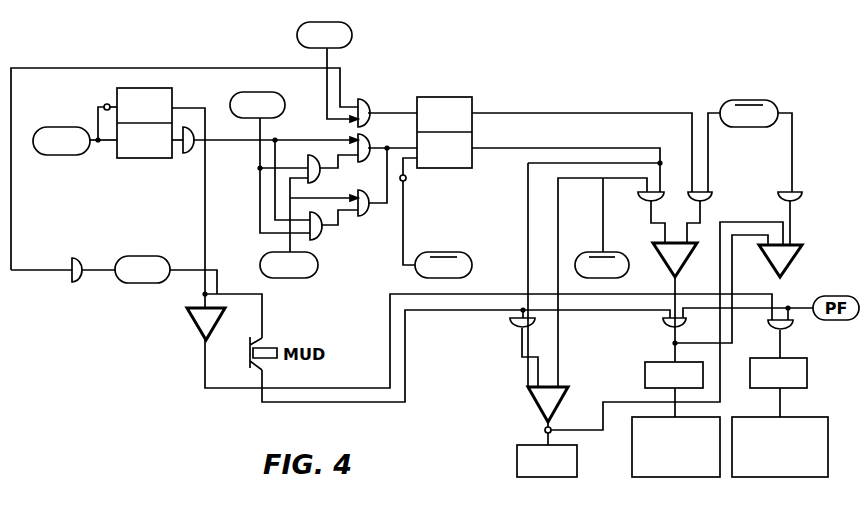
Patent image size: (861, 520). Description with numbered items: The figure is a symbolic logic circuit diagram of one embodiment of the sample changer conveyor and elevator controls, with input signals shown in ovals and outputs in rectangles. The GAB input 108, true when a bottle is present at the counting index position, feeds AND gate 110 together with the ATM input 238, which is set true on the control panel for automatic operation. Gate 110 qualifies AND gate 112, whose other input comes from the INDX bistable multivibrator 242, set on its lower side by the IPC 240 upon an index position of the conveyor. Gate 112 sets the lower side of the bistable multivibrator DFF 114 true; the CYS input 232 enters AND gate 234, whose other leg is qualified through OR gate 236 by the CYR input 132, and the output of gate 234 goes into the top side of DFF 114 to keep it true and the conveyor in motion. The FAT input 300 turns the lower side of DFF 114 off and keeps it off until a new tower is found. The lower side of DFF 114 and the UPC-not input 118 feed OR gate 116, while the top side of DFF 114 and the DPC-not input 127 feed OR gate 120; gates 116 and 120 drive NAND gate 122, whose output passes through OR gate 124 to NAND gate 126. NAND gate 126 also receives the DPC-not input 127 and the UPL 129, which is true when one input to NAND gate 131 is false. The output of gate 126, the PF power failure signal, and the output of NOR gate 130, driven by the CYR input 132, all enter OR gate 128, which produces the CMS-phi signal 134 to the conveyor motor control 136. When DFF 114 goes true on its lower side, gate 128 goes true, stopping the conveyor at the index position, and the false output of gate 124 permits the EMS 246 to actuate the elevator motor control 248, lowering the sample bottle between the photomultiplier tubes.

The GAB input 108 is at (281, 117).
The AND gate 110 is at (318, 176).
The AND gate 112 is at (370, 135).
The bistable multivibrator DFF 114 is at (462, 97).
The OR gate 116 is at (645, 201).
The UPC-not input 118 is at (636, 244).
The OR gate 120 is at (712, 196).
The NAND gate 122 is at (665, 265).
The OR gate 124 is at (661, 324).
The NAND gate 126 is at (805, 255).
The DPC-not input 127 is at (768, 100).
The OR gate 128 is at (794, 330).
The UPL 129 is at (565, 477).
The NOR gate 130 is at (195, 325).
The NAND gate 131 is at (525, 388).
The CYR input 132 is at (163, 256).
The CMS-phi signal 134 is at (807, 375).
The conveyor motor control 136 is at (815, 477).
The CYS input 232 is at (352, 36).
The AND gate 234 is at (370, 100).
The OR gate 236 is at (80, 283).
The ATM input 238 is at (318, 265).
The IPC 240 is at (58, 155).
The INDX bistable multivibrator 242 is at (172, 93).
The EMS 246 is at (644, 375).
The elevator motor control 248 is at (705, 477).
The FAT input 300 is at (466, 252).